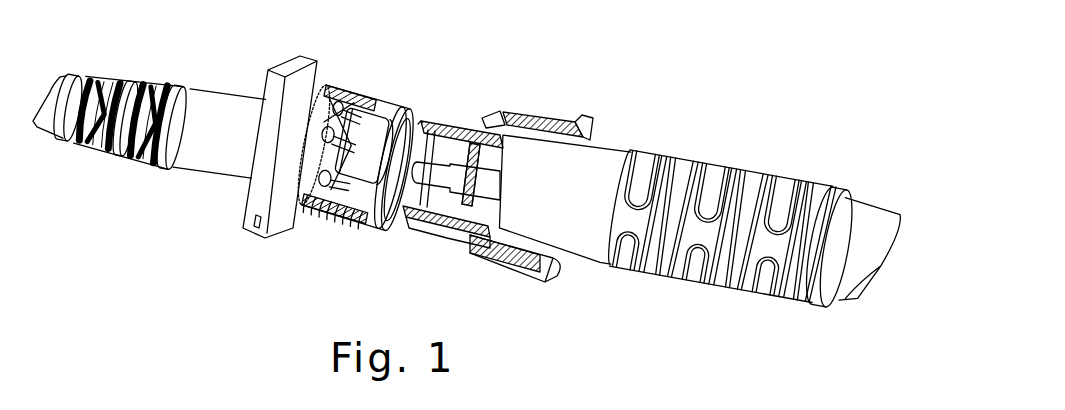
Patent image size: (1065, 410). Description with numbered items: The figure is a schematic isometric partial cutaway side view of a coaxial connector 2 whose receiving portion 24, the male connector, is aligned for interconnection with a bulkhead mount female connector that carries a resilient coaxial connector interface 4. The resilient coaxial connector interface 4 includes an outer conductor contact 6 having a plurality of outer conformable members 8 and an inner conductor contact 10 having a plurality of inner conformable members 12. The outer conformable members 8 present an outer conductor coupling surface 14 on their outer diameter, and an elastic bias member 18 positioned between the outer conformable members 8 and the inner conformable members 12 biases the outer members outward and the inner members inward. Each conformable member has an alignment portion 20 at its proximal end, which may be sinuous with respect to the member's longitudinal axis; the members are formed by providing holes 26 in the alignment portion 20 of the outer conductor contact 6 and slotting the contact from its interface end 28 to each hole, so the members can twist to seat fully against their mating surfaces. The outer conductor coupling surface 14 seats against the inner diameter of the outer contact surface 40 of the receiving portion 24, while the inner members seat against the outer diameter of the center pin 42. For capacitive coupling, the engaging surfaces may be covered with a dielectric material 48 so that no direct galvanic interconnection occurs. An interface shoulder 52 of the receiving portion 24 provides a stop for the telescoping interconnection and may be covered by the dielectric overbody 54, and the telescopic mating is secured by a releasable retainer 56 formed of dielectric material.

The coaxial connector 2 is at (272, 98).
The resilient coaxial connector interface 4 is at (368, 190).
The outer conductor contact 6 is at (427, 121).
The outer conformable members 8 is at (427, 121).
The inner conductor contact 10 is at (267, 122).
The inner conformable members 12 is at (312, 58).
The outer conductor coupling surface 14 is at (427, 121).
The elastic bias member 18 is at (363, 226).
The alignment portion 20 is at (335, 167).
The receiving portion 24 is at (490, 243).
The holes 26 is at (310, 186).
The interface end 28 is at (380, 165).
The outer contact surface 40 is at (445, 223).
The center pin 42 is at (428, 170).
The dielectric material 48 is at (345, 127).
The interface shoulder 52 is at (486, 118).
The overbody 54 is at (595, 168).
The releasable retainer 56 is at (587, 128).